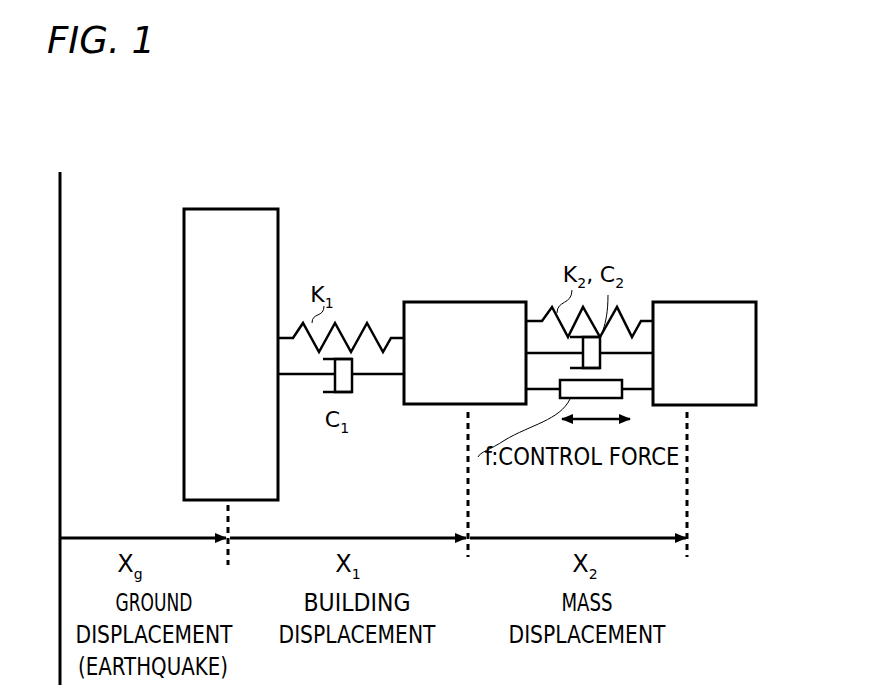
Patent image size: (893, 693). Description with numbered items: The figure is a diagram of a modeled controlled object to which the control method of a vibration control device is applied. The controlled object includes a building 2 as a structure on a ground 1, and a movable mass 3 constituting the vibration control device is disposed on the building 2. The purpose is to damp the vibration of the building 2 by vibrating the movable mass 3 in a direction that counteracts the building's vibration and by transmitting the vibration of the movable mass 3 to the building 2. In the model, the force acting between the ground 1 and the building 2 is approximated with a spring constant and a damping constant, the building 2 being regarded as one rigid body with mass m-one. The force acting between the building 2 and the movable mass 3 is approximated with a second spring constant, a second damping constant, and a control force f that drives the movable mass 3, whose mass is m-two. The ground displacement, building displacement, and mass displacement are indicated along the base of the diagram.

The ground 1 is at (226, 209).
The building 2 is at (503, 302).
The movable mass 3 is at (733, 302).